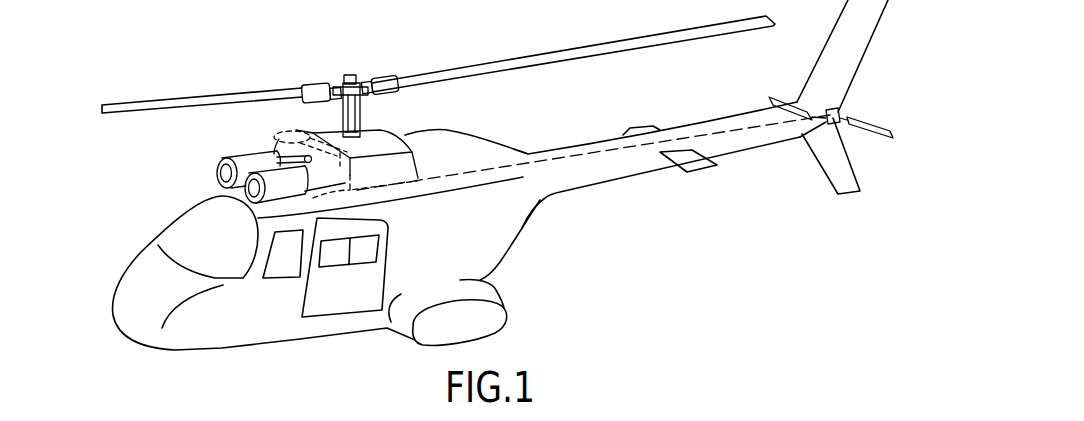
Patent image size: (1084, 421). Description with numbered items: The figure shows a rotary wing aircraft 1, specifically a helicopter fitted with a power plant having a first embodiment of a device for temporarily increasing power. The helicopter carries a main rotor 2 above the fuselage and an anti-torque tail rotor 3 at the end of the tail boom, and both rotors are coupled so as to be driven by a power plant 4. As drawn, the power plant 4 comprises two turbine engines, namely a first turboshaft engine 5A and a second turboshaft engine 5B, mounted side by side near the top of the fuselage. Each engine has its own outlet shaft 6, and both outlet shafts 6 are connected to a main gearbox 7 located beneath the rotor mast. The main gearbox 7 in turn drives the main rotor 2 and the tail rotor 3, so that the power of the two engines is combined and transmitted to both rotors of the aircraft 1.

The rotary wing aircraft 1 is at (497, 175).
The main rotor 2 is at (561, 52).
The anti-torque tail rotor 3 is at (779, 99).
The power plant 4 is at (248, 219).
The first turboshaft engine 5A is at (276, 175).
The second turboshaft engine 5B is at (236, 157).
The outlet shaft 6 is at (292, 142).
The main gearbox 7 is at (381, 138).